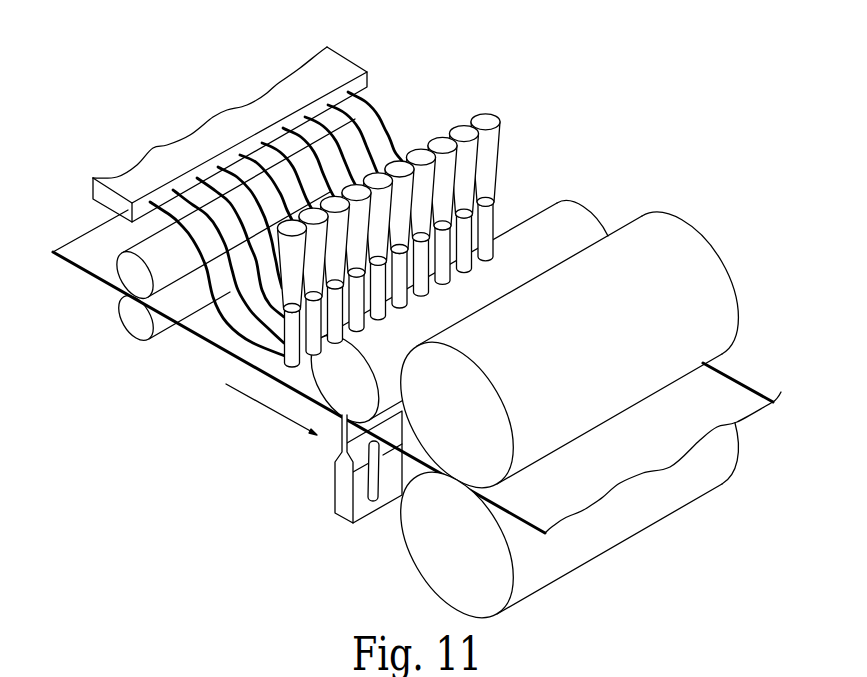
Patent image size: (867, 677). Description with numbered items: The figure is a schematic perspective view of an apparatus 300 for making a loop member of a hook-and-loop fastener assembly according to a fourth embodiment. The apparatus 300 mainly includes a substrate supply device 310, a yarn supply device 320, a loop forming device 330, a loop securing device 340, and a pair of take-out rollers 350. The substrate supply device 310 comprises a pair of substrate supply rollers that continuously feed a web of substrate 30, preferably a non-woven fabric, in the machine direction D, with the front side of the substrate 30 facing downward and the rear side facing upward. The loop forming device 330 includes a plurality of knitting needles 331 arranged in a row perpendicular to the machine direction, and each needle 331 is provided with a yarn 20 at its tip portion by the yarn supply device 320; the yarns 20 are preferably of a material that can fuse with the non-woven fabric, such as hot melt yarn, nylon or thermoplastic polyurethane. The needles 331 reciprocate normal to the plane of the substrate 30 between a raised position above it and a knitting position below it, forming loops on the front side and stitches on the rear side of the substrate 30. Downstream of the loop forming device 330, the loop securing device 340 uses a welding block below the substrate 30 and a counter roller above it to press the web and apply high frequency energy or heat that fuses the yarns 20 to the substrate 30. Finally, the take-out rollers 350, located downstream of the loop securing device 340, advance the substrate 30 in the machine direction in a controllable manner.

The yarn 20 is at (380, 107).
The substrate 30 is at (213, 325).
The apparatus 300 is at (170, 523).
The substrate supply device 310 is at (133, 321).
The yarn supply device 320 is at (333, 64).
The loop forming device 330 is at (503, 100).
The knitting needle 331 is at (494, 152).
The loop securing device 340 is at (303, 523).
The take-out rollers 350 is at (698, 252).